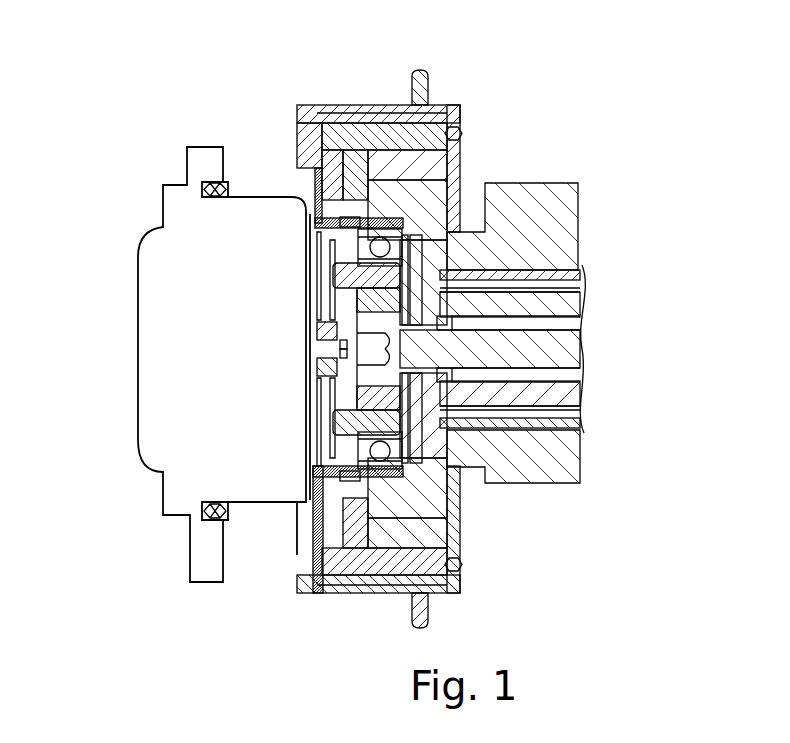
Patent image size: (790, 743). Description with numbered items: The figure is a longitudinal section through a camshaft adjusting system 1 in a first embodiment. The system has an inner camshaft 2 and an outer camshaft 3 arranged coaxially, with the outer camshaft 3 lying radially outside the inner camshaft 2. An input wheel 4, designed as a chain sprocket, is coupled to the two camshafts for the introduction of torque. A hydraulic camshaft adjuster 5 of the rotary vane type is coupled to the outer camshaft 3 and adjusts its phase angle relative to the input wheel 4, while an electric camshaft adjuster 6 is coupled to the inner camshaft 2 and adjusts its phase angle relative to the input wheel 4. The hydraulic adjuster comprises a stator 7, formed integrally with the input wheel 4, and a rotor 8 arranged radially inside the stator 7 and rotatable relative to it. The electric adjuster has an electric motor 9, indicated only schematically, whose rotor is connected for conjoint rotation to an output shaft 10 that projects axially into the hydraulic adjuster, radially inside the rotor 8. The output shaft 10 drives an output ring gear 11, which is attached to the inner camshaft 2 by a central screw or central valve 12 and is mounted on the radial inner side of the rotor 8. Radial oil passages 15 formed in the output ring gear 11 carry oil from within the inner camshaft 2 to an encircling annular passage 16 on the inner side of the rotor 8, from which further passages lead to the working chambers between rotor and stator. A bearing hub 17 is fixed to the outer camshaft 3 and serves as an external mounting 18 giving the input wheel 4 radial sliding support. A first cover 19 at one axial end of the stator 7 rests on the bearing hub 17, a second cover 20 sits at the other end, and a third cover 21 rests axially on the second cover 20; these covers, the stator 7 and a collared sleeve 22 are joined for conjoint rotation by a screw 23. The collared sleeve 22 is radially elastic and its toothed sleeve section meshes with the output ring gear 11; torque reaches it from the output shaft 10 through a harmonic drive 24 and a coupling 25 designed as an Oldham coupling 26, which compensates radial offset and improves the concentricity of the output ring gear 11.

The camshaft adjusting system 1 is at (635, 140).
The inner camshaft 2 is at (570, 305).
The outer camshaft 3 is at (565, 272).
The input wheel 4 is at (392, 128).
The hydraulic camshaft adjuster 5 is at (478, 100).
The electric camshaft adjuster 6 is at (237, 172).
The stator 7 is at (433, 160).
The rotor 8 is at (440, 207).
The electric motor 9 is at (216, 266).
The output shaft 10 is at (337, 352).
The output ring gear 11 is at (372, 500).
The central screw/central valve 12 is at (568, 357).
The oil passages 15 is at (430, 440).
The annular passage 16 is at (412, 428).
The bearing hub 17 is at (513, 333).
The external mounting 18 is at (565, 215).
The first cover 19 is at (457, 178).
The second cover 20 is at (352, 120).
The third cover 21 is at (335, 163).
The collared sleeve 22 is at (365, 258).
The screw 23 is at (433, 138).
The harmonic drive 24 is at (355, 250).
The coupling 25 is at (343, 455).
The Oldham coupling 26 is at (358, 471).